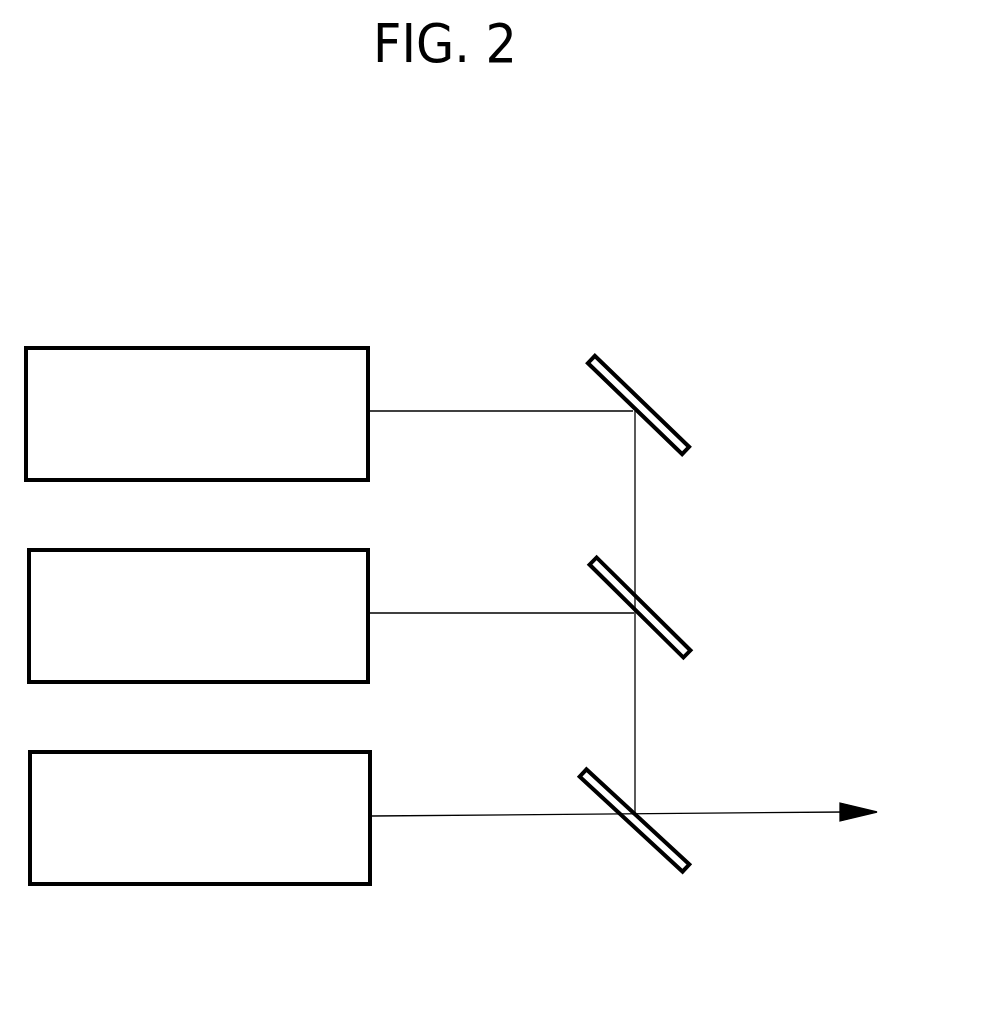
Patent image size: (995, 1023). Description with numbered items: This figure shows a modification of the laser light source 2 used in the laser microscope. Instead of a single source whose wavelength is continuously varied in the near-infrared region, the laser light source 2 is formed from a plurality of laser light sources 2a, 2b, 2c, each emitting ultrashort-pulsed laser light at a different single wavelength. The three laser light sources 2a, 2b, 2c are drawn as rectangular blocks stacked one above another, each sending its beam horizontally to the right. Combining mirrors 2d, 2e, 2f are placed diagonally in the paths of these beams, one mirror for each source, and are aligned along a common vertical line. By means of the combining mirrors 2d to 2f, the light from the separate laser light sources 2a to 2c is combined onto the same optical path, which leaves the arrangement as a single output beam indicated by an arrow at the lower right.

The laser light source 2 is at (836, 243).
The laser light source 2a is at (370, 362).
The laser light source 2b is at (370, 563).
The laser light source 2c is at (372, 766).
The combining mirror 2d is at (622, 378).
The combining mirror 2e is at (673, 625).
The combining mirror 2f is at (675, 847).